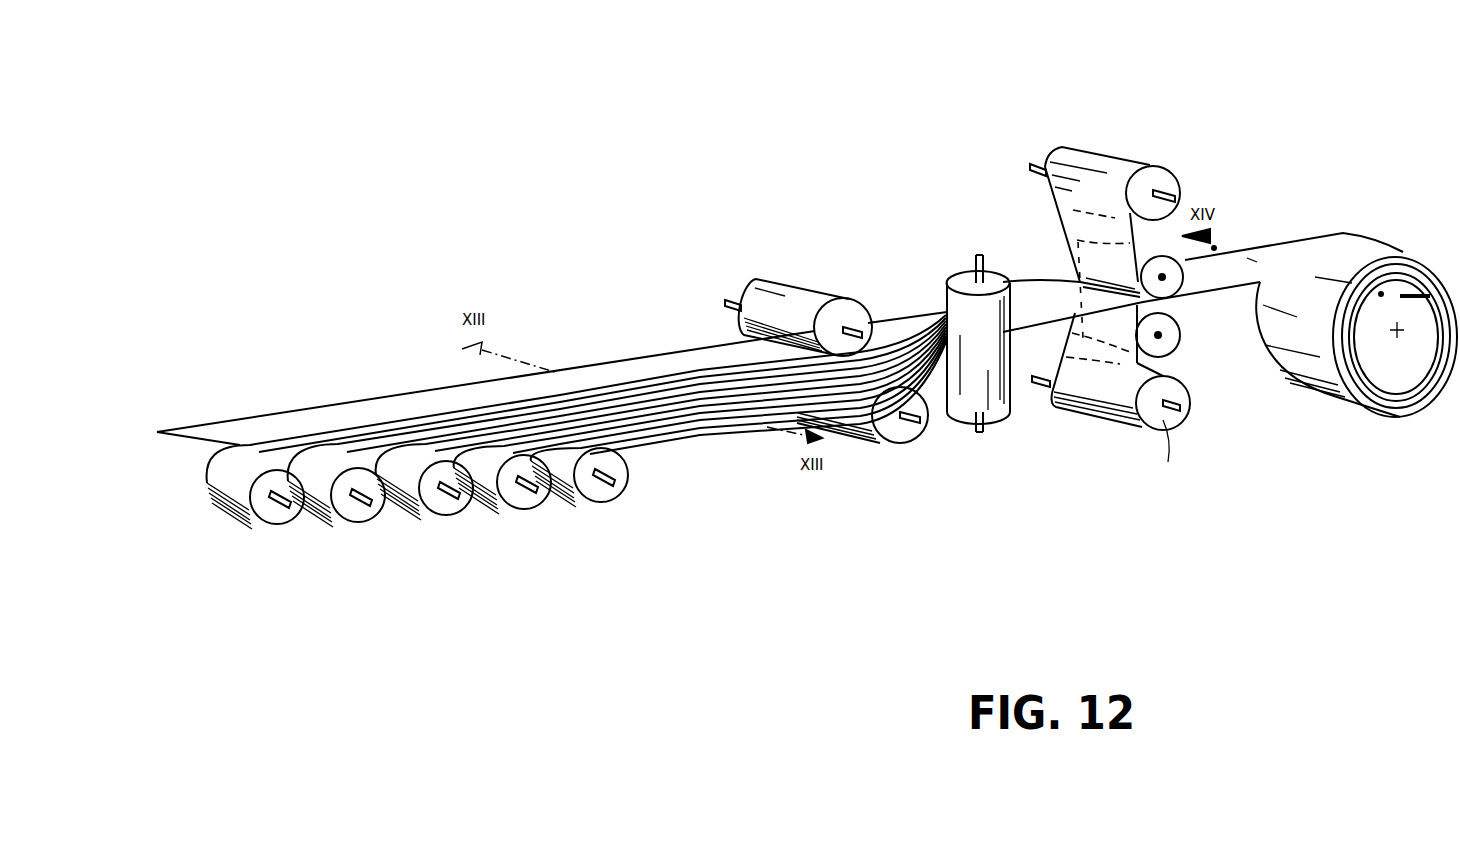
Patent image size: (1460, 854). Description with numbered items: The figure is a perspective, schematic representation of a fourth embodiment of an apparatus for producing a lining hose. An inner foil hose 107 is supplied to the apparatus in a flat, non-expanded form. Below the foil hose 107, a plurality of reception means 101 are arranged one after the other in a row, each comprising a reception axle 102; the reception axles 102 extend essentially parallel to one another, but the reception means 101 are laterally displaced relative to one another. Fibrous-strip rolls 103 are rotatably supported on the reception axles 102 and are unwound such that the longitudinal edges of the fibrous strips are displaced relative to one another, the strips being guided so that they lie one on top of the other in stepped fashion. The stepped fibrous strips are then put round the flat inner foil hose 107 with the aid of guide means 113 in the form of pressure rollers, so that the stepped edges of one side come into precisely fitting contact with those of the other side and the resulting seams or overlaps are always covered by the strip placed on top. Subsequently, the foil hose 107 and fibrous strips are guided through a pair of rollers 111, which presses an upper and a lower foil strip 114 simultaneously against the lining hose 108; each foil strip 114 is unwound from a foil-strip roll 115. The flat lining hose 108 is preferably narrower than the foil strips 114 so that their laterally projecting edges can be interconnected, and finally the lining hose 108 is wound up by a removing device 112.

The reception means 101 is at (290, 585).
The reception axle 102 is at (615, 497).
The fibrous-strip roll 103 is at (604, 493).
The inner foil hose 107 is at (157, 432).
The lining hose 108 is at (1202, 277).
The pair of rollers 111 is at (1188, 350).
The removing device 112 is at (1408, 365).
The guide means 113 is at (868, 266).
The foil strip 114 is at (1042, 208).
The foil-strip roll 115 is at (1158, 178).